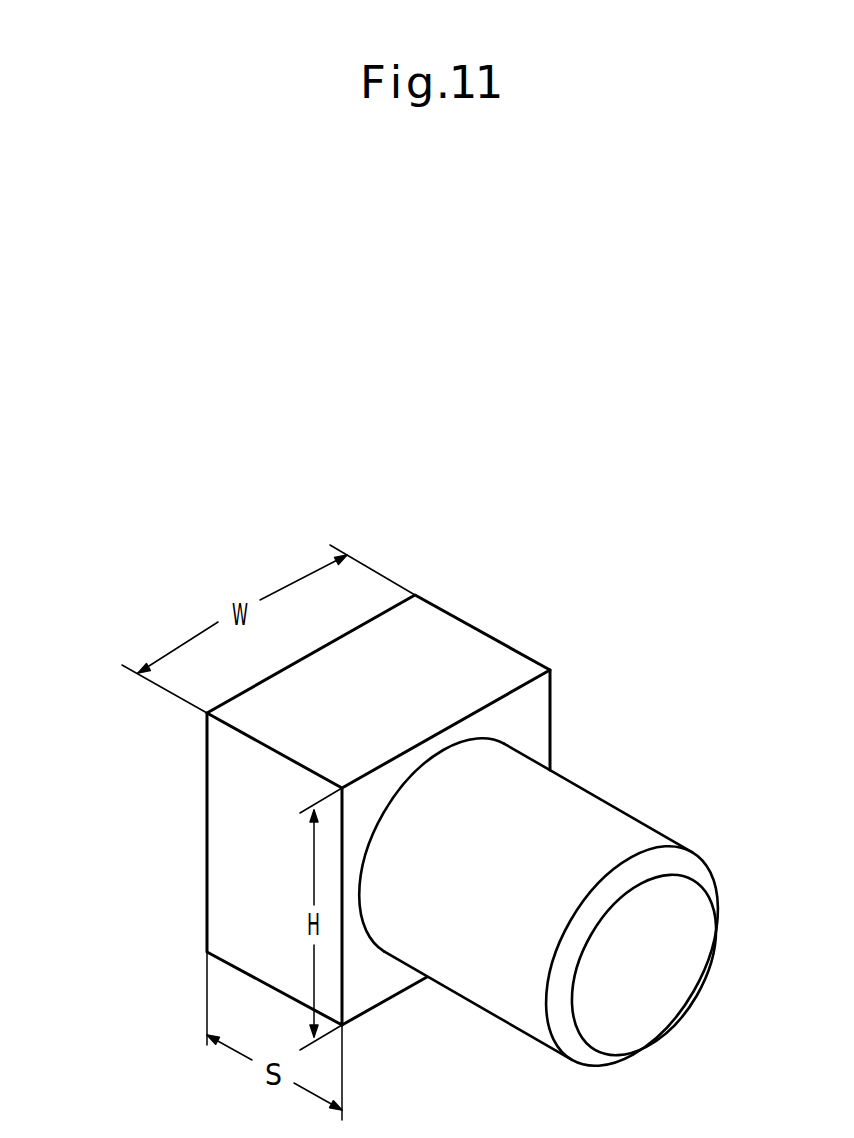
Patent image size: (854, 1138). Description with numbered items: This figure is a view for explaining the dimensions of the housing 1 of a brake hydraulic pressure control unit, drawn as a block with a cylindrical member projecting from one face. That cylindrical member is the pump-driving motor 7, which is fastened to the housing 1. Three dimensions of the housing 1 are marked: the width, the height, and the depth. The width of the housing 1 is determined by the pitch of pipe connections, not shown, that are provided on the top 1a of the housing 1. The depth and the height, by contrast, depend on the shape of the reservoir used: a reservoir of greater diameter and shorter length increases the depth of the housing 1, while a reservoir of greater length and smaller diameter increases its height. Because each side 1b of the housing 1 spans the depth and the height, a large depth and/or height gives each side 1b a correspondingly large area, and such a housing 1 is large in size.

The housing 1 is at (365, 732).
The top of the housing 1a is at (455, 640).
The side of the housing 1b is at (247, 862).
The pump-driving motor 7 is at (610, 827).